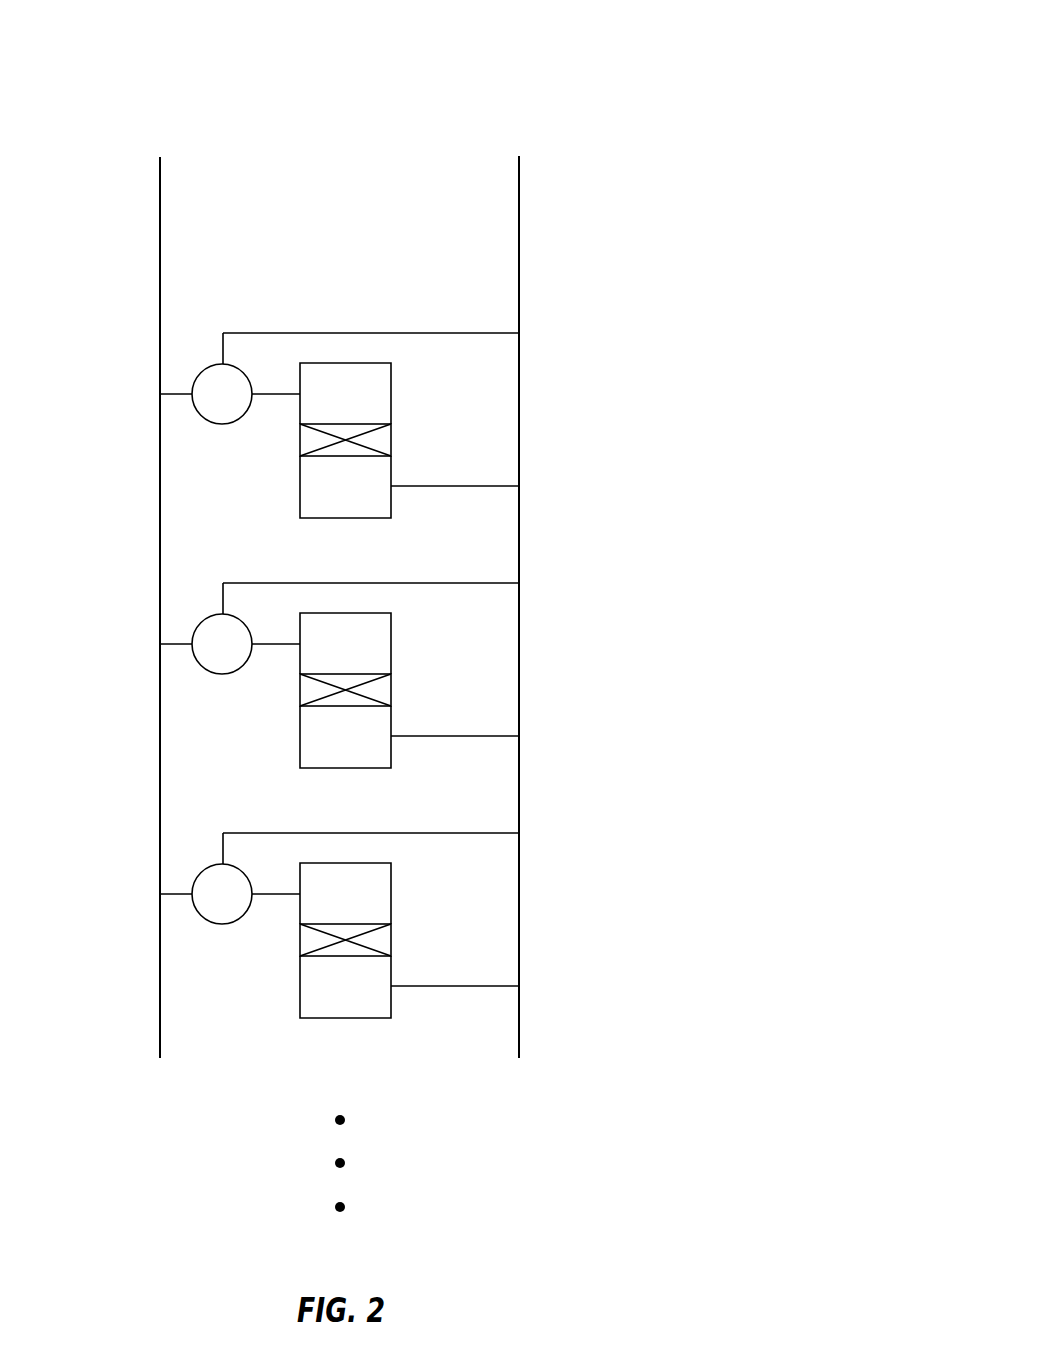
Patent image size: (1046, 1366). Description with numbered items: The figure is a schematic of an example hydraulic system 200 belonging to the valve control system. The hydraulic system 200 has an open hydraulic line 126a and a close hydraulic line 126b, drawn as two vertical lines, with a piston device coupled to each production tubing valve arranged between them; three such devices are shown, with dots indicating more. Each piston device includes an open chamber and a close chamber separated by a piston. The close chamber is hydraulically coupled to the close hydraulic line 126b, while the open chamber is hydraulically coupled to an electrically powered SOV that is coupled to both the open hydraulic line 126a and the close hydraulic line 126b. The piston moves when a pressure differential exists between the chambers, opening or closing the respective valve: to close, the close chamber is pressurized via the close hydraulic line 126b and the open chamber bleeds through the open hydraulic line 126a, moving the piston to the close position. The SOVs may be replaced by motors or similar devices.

The hydraulic system 200 is at (633, 46).
The open hydraulic line 126a is at (160, 248).
The close hydraulic line 126b is at (519, 247).